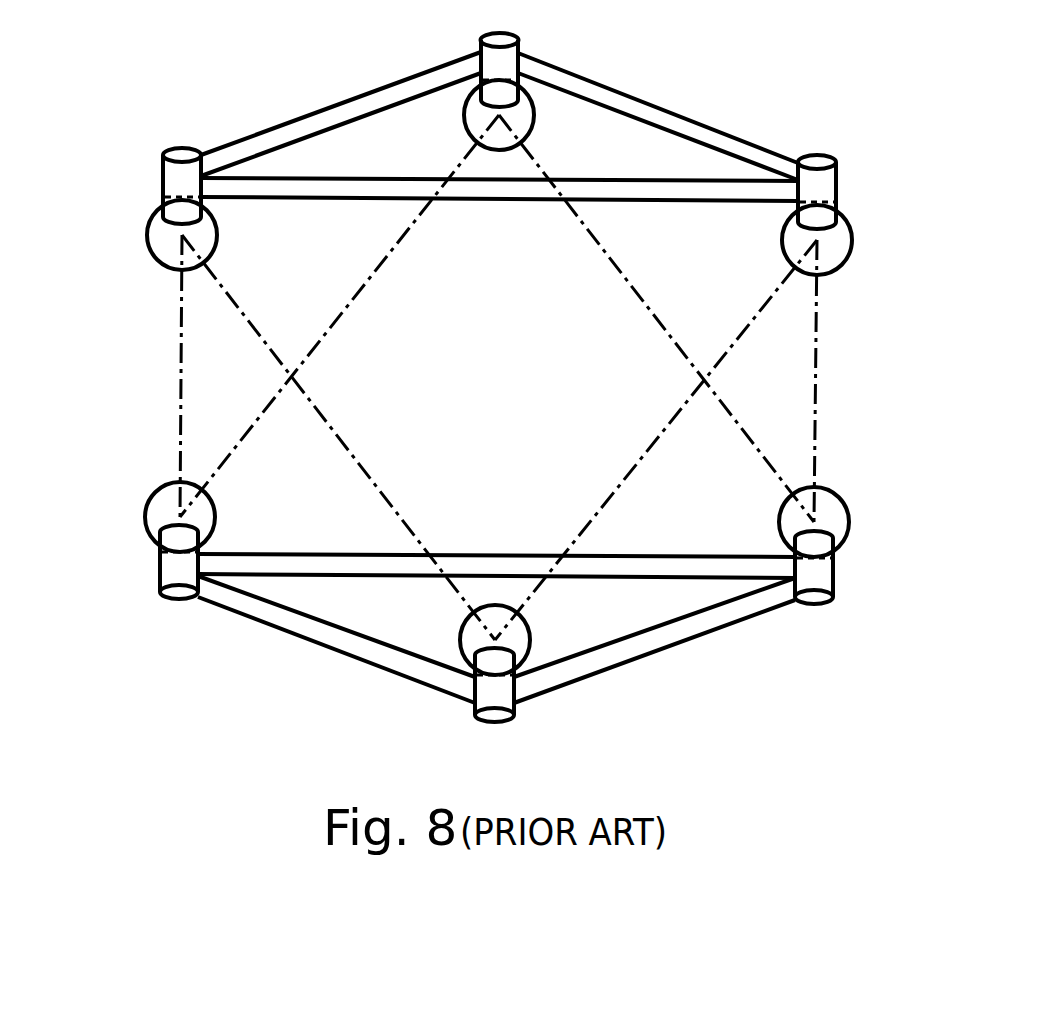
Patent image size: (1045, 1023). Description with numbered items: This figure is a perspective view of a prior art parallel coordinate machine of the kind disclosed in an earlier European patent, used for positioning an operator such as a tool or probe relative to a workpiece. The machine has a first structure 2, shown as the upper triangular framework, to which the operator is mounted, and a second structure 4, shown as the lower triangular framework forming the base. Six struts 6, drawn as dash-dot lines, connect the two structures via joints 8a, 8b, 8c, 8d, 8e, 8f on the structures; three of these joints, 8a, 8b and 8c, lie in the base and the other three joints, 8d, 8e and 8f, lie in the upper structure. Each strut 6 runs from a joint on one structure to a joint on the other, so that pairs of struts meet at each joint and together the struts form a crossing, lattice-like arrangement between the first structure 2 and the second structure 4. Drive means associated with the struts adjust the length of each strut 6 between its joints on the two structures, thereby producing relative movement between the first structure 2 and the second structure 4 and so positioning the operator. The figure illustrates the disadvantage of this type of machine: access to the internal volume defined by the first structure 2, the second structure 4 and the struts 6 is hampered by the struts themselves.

The first structure 2 is at (368, 133).
The second structure 4 is at (376, 620).
The struts 6 is at (178, 411).
The joint 8a is at (167, 513).
The joint 8b is at (837, 530).
The joint 8c is at (520, 642).
The joint 8d is at (163, 237).
The joint 8e is at (523, 113).
The joint 8f is at (833, 247).